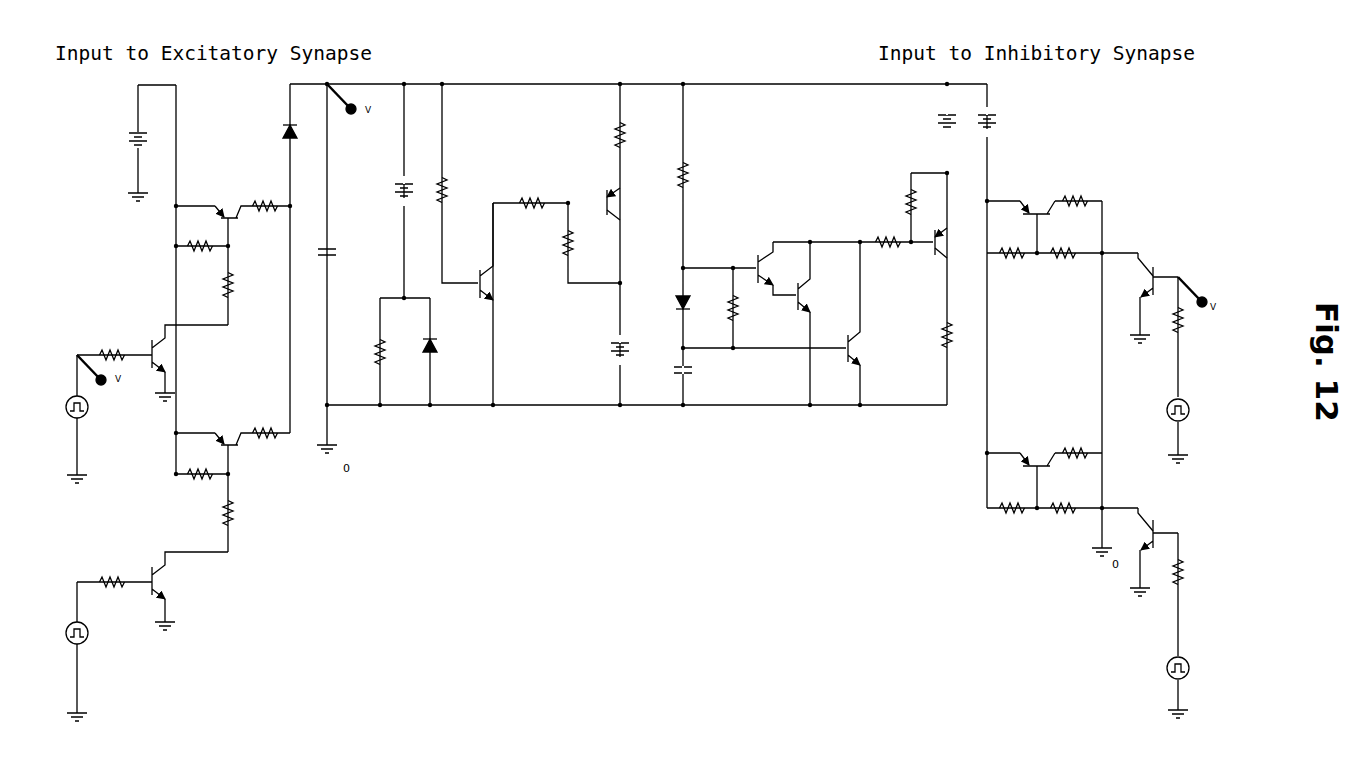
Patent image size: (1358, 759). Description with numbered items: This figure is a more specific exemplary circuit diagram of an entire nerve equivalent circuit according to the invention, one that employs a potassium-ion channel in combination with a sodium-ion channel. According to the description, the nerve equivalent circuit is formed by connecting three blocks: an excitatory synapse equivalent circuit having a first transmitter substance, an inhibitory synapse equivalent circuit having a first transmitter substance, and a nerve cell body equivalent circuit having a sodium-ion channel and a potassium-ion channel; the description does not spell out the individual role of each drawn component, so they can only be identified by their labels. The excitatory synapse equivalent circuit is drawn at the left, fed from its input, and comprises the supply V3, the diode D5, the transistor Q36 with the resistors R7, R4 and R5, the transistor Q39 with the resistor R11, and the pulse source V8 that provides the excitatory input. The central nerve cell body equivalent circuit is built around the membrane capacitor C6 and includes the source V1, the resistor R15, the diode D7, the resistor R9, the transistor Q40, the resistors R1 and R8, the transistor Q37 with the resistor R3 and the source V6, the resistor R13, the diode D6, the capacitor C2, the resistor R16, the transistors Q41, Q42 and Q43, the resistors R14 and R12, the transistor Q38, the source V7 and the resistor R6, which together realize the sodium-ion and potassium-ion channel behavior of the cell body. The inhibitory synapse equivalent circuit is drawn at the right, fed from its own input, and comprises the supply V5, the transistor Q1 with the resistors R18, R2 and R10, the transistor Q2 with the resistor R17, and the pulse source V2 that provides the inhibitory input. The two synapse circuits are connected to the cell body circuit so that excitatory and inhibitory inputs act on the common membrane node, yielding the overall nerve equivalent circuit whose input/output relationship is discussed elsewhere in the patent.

The 5V DC supply (excitatory) V3 is at (129, 149).
The diode DGWJ42 D5 is at (268, 118).
The PNP transistor QA1015 Q36 is at (214, 327).
The resistor 7k R7 is at (270, 318).
The resistor 10k R4 is at (202, 359).
The resistor 10k R5 is at (245, 399).
The NPN transistor QC1815 Q39 is at (184, 469).
The resistor 1k R11 is at (113, 467).
The pulse voltage source Ve V8 is at (100, 543).
The membrane capacitor Cm 2u C6 is at (331, 260).
The 0.5V DC source V1 is at (384, 188).
The resistor 100k R15 is at (397, 345).
The diode DGWJ42 D7 is at (456, 340).
The resistor 10k R9 is at (459, 191).
The NPN transistor QC1815 Q40 is at (514, 251).
The resistor 10k R1 is at (535, 204).
The resistor 10k R8 is at (583, 244).
The PNP transistor QA1015 Q37 is at (640, 204).
The resistor 10 R3 is at (633, 136).
The 5V DC source V6 is at (605, 343).
The resistor 25k R13 is at (704, 179).
The diode DGWJ42 D6 is at (667, 301).
The capacitor 0.5u C2 is at (697, 378).
The resistor 5k R16 is at (752, 310).
The NPN transistor QC1815 Q41 is at (793, 268).
The NPN transistor QC1815 Q42 is at (832, 323).
The NPN transistor QC1815 Q43 is at (882, 323).
The resistor 10k R14 is at (892, 259).
The resistor 10k R12 is at (894, 200).
The PNP transistor QA1015 Q38 is at (964, 248).
The 5V DC source V7 is at (933, 120).
The resistor 100 R6 is at (962, 328).
The 5V DC source (inhibitory) V5 is at (1000, 120).
The PNP transistor QA1015 Q1 is at (1034, 320).
The resistor 5k R18 is at (1075, 329).
The resistor 10k R2 is at (1015, 380).
The resistor 10k R10 is at (1065, 380).
The NPN transistor QC1815 Q2 is at (1168, 423).
The resistor 1k R17 is at (1166, 455).
The pulse voltage source Vi V2 is at (1159, 550).